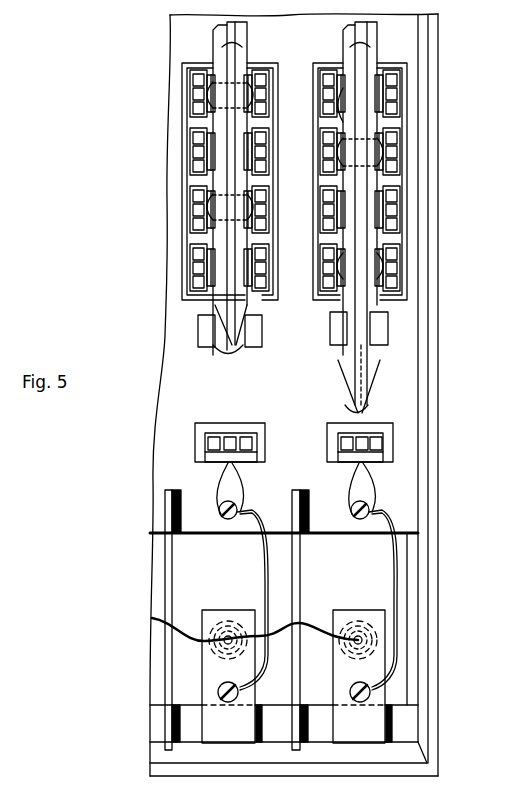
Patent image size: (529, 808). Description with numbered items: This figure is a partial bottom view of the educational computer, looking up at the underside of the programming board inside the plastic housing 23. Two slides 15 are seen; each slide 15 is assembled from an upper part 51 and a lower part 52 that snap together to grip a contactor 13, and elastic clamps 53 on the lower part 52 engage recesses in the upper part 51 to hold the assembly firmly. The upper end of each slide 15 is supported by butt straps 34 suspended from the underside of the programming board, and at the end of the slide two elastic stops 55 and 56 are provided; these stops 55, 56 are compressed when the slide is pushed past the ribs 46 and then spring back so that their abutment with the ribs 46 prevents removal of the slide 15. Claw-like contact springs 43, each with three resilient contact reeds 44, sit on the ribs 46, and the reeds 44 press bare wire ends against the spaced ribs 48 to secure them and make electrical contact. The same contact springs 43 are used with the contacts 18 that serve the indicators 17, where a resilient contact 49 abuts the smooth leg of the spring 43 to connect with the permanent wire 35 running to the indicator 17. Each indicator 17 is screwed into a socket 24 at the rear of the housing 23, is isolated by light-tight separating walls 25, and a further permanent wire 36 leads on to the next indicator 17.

The contactor 13 is at (210, 88).
The slide 15 is at (335, 50).
The indicator 17 is at (222, 625).
The contacts 18 is at (204, 410).
The housing 23 is at (433, 394).
The socket 24 is at (345, 668).
The separating wall 25 is at (165, 575).
The butt strap 34 is at (200, 325).
The permanent wire 35 is at (265, 570).
The permanent wire 36 is at (183, 640).
The contact spring 43 is at (190, 266).
The contact reed 44 is at (248, 433).
The rib 46 is at (336, 97).
The rib 48 is at (186, 147).
The resilient contact 49 is at (240, 480).
The upper part 51 is at (213, 30).
The lower part 52 is at (228, 58).
The elastic clamp 53 is at (245, 152).
The elastic stop 55 is at (217, 330).
The elastic stop 56 is at (260, 338).